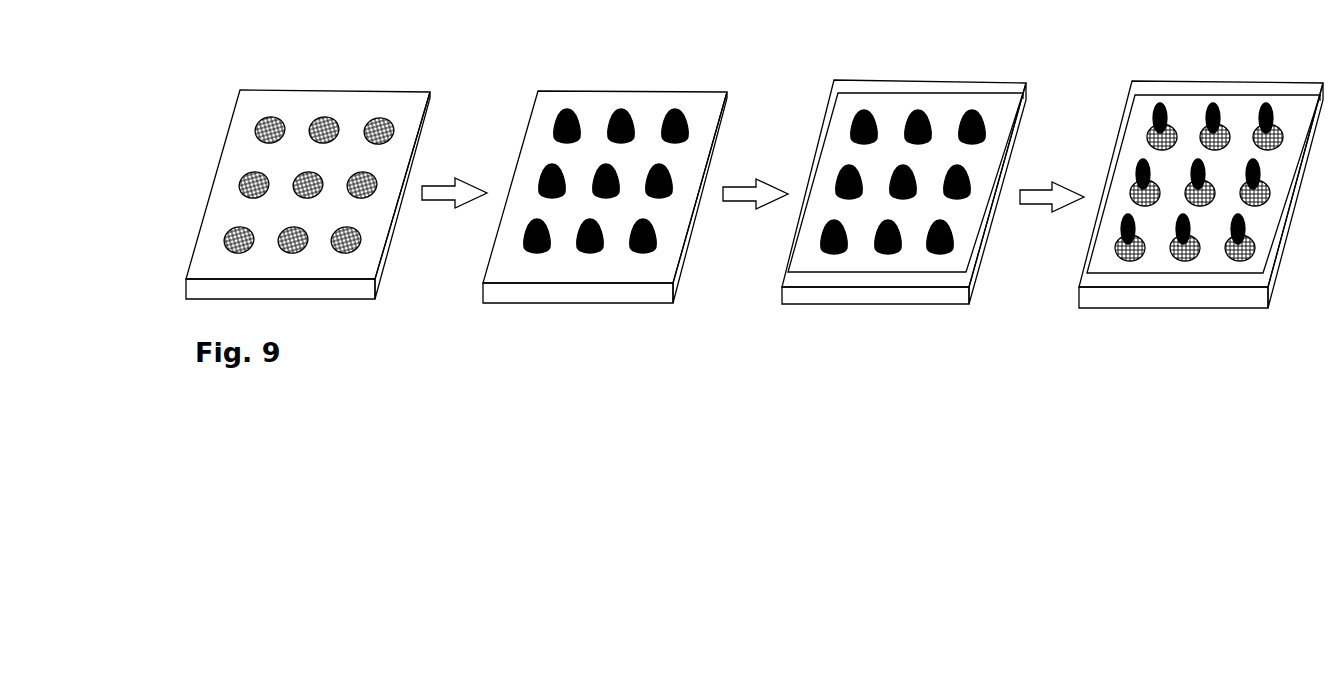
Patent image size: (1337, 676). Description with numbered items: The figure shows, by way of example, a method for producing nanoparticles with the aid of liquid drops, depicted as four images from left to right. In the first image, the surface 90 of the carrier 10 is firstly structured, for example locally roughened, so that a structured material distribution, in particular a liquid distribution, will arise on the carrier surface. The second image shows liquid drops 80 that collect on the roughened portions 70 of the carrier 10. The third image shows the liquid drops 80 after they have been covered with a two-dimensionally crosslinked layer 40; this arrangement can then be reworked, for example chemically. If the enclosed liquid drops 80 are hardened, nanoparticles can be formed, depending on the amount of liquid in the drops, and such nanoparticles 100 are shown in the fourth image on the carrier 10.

The carrier 10 is at (741, 194).
The surface of the carrier 90 is at (308, 184).
The roughened portions 70 is at (322, 117).
The liquid drops 80 is at (573, 108).
The two-dimensionally crosslinked layer 40 is at (978, 82).
The nanoparticles 100 is at (1269, 101).